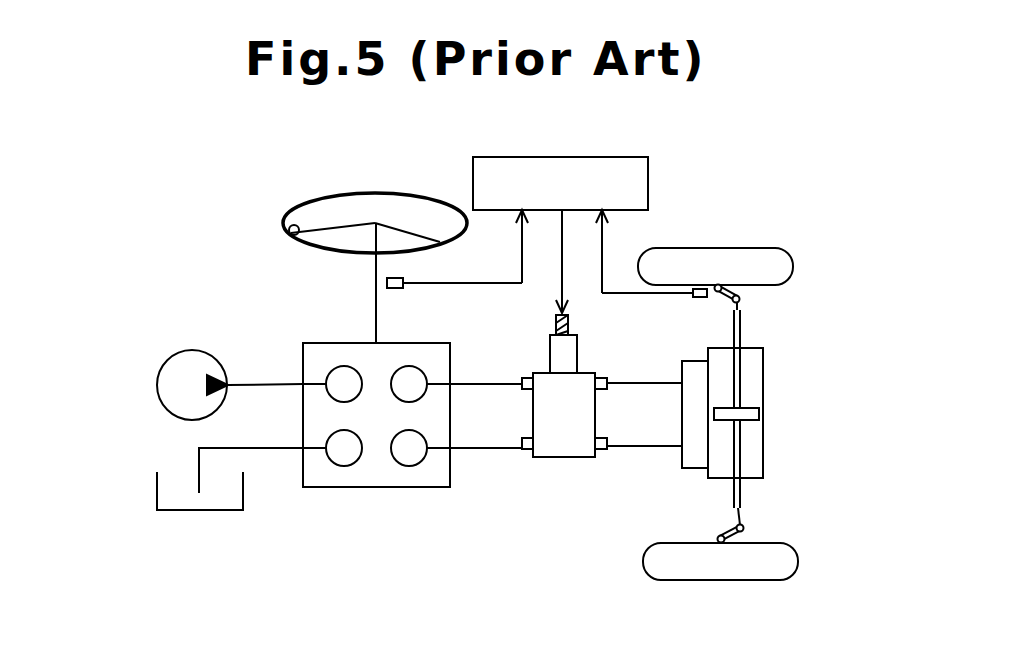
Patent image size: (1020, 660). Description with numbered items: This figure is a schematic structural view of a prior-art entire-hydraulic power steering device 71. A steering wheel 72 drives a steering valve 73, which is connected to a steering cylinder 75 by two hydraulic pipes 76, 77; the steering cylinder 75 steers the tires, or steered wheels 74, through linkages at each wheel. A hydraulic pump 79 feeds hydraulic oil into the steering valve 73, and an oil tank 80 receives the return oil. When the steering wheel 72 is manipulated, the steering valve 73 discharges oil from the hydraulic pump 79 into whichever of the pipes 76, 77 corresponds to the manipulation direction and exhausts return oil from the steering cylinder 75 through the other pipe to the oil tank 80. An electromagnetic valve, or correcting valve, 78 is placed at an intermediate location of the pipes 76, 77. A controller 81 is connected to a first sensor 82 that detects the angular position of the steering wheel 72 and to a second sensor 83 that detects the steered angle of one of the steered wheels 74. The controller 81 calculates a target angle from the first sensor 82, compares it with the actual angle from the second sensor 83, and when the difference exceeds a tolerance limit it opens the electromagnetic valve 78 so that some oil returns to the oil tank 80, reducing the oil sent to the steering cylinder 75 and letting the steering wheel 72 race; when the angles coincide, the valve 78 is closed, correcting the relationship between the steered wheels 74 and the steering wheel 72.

The entire-hydraulic power steering device 71 is at (254, 284).
The steering wheel 72 is at (334, 196).
The steering valve 73 is at (378, 489).
The steered wheels 74 is at (726, 246).
The steering cylinder 75 is at (764, 388).
The hydraulic pipe 76 is at (643, 382).
The hydraulic pipe 77 is at (638, 448).
The electromagnetic valve 78 is at (565, 461).
The hydraulic pump 79 is at (156, 384).
The oil tank 80 is at (157, 490).
The controller 81 is at (551, 156).
The first sensor 82 is at (396, 289).
The second sensor 83 is at (700, 298).